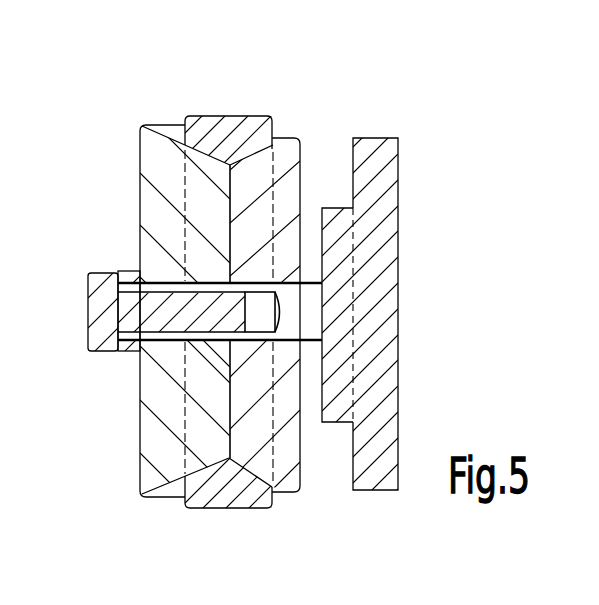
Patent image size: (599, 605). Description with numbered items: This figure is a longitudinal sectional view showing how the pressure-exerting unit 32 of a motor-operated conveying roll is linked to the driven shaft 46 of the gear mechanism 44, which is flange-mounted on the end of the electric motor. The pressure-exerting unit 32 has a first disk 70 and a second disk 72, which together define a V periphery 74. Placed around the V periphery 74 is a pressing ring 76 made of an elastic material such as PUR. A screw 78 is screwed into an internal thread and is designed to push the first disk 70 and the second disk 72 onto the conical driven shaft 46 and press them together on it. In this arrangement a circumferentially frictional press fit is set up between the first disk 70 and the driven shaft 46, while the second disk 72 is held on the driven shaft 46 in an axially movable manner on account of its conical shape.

The pressure-exerting unit 32 is at (163, 120).
The gear mechanism 44 is at (365, 157).
The driven shaft 46 is at (303, 342).
The first disk 70 is at (290, 190).
The second disk 72 is at (157, 218).
The V periphery 74 is at (161, 494).
The pressing ring 76 is at (218, 116).
The screw 78 is at (96, 340).